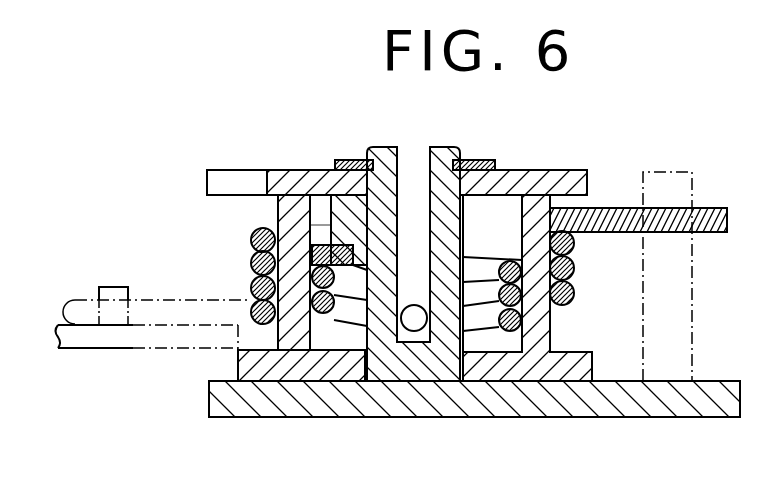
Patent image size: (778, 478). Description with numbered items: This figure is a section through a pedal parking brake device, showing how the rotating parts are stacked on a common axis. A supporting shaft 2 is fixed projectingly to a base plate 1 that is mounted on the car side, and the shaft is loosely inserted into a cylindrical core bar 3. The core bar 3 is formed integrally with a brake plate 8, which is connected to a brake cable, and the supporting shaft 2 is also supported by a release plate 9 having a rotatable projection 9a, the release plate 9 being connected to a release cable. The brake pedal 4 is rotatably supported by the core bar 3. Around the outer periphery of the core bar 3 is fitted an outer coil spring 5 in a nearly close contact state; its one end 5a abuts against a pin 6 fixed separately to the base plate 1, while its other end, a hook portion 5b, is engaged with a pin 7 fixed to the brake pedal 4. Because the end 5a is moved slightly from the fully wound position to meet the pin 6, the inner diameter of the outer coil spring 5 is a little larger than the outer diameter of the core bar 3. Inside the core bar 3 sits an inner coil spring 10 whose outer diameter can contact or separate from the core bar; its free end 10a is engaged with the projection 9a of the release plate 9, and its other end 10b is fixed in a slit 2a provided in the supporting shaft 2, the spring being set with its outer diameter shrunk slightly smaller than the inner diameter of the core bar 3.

The base plate 1 is at (630, 407).
The supporting shaft 2 is at (383, 148).
The slit 2a is at (416, 160).
The core bar 3 is at (292, 268).
The brake pedal 4 is at (90, 342).
The outer coil spring 5 is at (578, 296).
The end of the outer coil spring 5a is at (718, 208).
The hook portion 5b is at (70, 308).
The pin 6 is at (683, 300).
The pin 7 is at (113, 290).
The brake plate 8 is at (262, 368).
The release plate 9 is at (253, 168).
The projection 9a is at (290, 225).
The inner coil spring 10 is at (483, 317).
The free end 10a is at (350, 245).
The end of the inner coil spring 10b is at (412, 322).